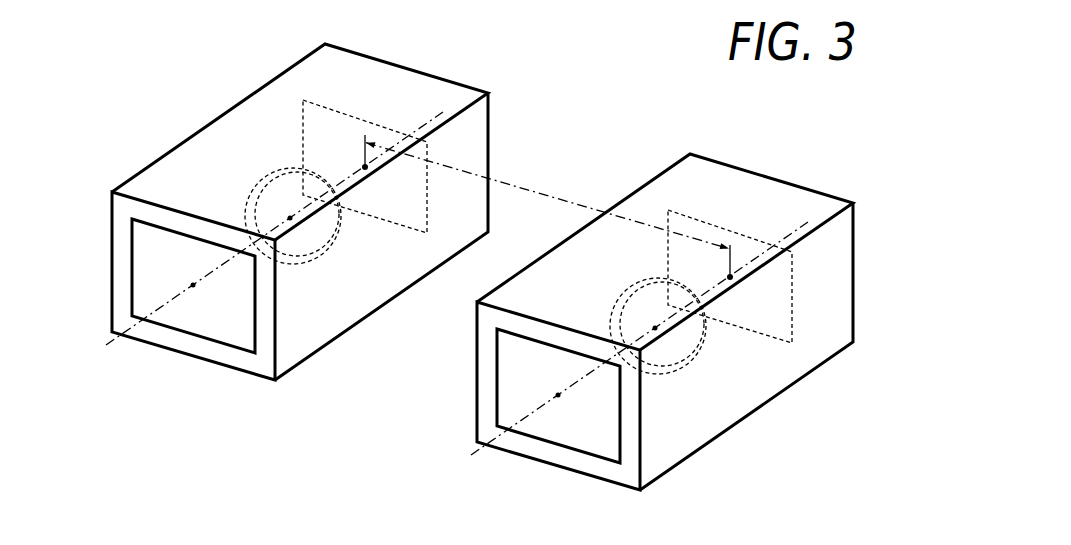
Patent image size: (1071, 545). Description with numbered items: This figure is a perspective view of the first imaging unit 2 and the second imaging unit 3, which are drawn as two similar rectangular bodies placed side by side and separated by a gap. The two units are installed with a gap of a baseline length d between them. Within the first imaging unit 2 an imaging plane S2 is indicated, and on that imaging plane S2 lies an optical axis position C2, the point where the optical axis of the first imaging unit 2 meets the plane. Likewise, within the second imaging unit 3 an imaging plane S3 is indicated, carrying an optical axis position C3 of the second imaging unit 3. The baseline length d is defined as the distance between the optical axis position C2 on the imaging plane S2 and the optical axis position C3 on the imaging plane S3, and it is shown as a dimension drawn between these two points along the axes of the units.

The second imaging unit 3 is at (300, 78).
The imaging plane of the second imaging unit S3 is at (345, 112).
The optical axis position on imaging plane S3 C3 is at (365, 167).
The first imaging unit 2 is at (647, 200).
The imaging plane of the first imaging unit S2 is at (703, 222).
The optical axis position on imaging plane S2 C2 is at (730, 277).
The baseline length d is at (547, 206).